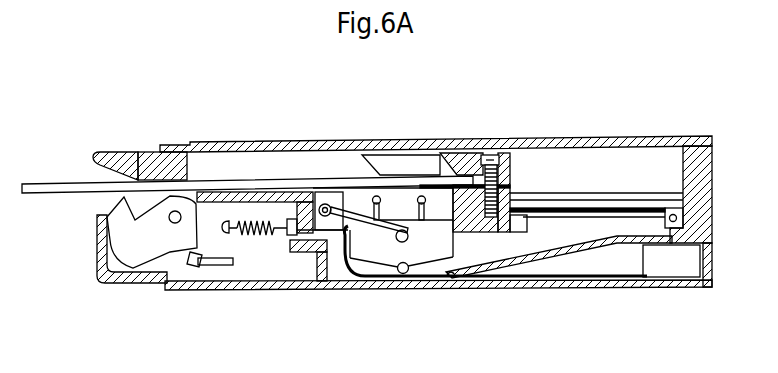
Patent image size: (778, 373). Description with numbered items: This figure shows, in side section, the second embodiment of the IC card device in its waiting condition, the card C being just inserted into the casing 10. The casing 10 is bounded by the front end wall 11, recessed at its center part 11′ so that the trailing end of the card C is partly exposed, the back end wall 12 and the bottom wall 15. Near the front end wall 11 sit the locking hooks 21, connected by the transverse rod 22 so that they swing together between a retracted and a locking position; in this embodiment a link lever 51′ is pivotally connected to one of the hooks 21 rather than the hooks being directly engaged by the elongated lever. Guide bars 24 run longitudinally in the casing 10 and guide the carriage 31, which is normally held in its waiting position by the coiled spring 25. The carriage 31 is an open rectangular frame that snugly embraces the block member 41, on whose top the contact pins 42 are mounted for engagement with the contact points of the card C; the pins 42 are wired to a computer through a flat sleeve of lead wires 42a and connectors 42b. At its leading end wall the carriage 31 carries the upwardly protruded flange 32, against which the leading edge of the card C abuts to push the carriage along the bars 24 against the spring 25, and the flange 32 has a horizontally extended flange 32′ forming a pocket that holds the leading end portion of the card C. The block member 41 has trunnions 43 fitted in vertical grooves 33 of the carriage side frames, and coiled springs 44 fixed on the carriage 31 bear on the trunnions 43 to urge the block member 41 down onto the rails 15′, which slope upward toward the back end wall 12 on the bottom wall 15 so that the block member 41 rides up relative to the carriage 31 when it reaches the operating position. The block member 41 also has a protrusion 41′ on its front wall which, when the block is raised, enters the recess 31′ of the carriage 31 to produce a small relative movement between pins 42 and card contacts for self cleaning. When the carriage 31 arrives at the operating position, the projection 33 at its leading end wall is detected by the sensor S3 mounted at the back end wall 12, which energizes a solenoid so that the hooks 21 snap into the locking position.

The casing 10 is at (595, 133).
The back end wall 12 is at (700, 191).
The sensor S3 is at (678, 219).
The bottom wall 15 is at (598, 288).
The rail 15′ is at (557, 252).
The connector 42b is at (663, 272).
The guide bar 24 is at (554, 200).
The center part 11′ is at (107, 175).
The IC card C is at (225, 185).
The front end wall 11 is at (101, 252).
The locking hook 21 is at (132, 254).
The transverse rod 22 is at (176, 224).
The link lever 51′ is at (211, 267).
The coiled spring 25 is at (259, 238).
The recess 31′ is at (352, 190).
The protrusion 41′ is at (322, 262).
The block member 41 is at (440, 246).
The contact pin 42 is at (421, 197).
The trunnion 43 is at (397, 243).
The coiled spring 44 is at (344, 264).
The lead wire 42a is at (462, 250).
The horizontally extended flange 32′ is at (422, 151).
The carriage 31 is at (485, 220).
The flange 32 is at (500, 153).
The projection 33 is at (521, 233).